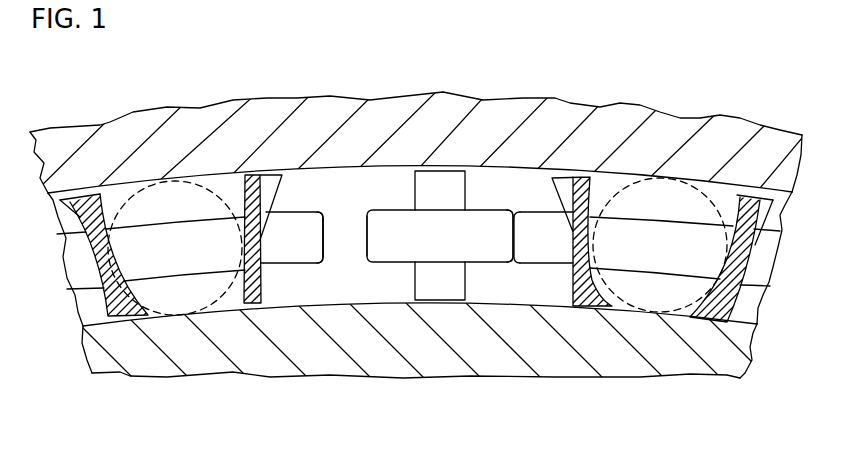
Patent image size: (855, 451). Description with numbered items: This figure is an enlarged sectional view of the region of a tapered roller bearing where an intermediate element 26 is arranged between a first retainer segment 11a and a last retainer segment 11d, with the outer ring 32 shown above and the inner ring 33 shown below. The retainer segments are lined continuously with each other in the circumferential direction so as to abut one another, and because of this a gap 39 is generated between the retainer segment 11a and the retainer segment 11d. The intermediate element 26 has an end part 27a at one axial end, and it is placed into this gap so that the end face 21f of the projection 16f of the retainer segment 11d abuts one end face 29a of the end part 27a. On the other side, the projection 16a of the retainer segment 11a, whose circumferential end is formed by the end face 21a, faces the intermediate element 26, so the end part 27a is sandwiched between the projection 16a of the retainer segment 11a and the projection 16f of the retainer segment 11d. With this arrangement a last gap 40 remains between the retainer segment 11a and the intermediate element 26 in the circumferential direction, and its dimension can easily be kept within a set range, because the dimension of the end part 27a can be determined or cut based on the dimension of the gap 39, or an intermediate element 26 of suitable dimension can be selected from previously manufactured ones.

The retainer segment 11a is at (88, 268).
The retainer segment 11d is at (750, 270).
The projection 16a is at (278, 243).
The projection 16f is at (523, 225).
The end face 21a is at (331, 226).
The end face 21f is at (515, 228).
The intermediate element 26 is at (438, 280).
The end part 27a is at (401, 237).
The end face 29a is at (367, 238).
The outer ring 32 is at (668, 150).
The inner ring 33 is at (623, 340).
The gap 39 is at (322, 74).
The last gap 40 is at (337, 240).